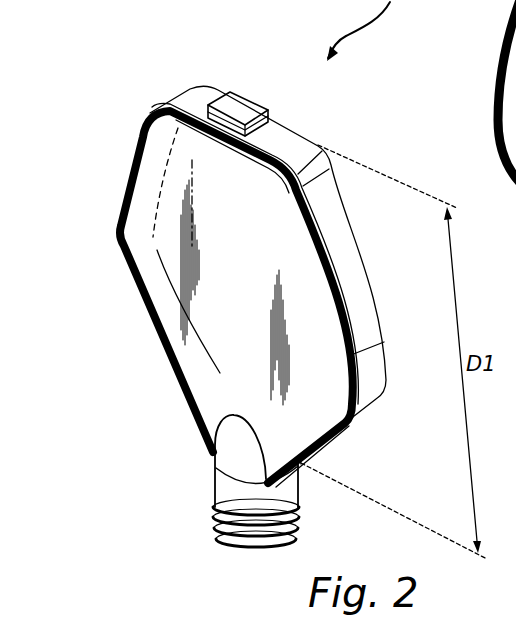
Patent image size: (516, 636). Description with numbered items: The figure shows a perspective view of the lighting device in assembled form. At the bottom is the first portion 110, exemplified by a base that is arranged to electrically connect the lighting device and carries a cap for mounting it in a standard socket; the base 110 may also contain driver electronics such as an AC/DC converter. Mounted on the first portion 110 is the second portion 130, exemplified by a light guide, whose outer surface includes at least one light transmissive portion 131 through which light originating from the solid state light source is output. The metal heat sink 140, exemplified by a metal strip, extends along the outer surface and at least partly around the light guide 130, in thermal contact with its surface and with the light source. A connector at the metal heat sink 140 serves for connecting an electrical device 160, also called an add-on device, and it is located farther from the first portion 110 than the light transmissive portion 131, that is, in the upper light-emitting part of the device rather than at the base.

The first portion 110 is at (100, 425).
The second portion 130 is at (88, 137).
The light transmissive portion of the outer surface 131 is at (213, 185).
The metal heat sink 140 is at (330, 243).
The electrical device 160 is at (242, 108).